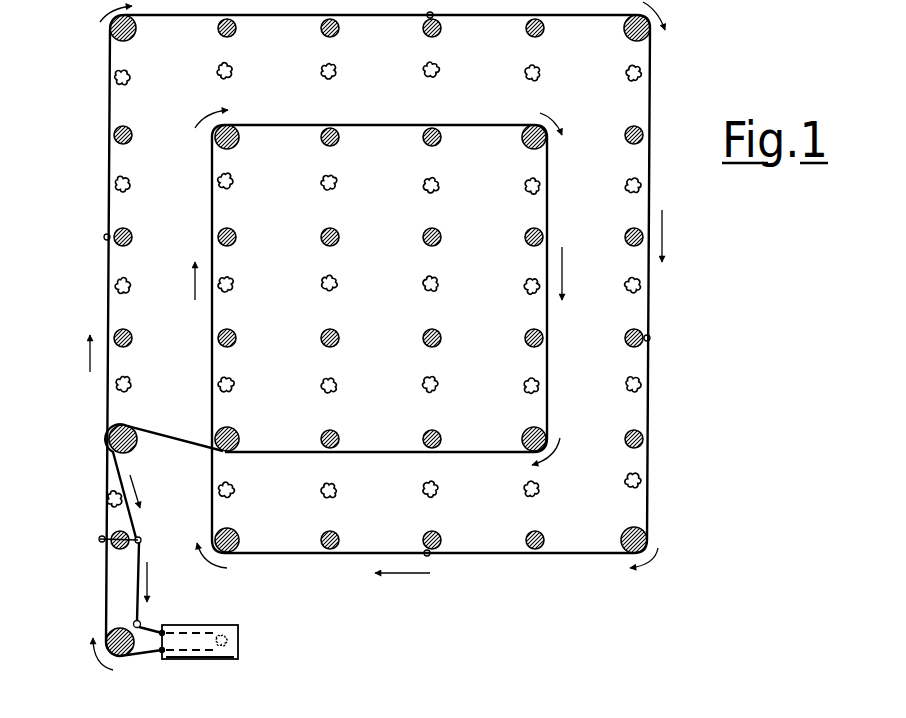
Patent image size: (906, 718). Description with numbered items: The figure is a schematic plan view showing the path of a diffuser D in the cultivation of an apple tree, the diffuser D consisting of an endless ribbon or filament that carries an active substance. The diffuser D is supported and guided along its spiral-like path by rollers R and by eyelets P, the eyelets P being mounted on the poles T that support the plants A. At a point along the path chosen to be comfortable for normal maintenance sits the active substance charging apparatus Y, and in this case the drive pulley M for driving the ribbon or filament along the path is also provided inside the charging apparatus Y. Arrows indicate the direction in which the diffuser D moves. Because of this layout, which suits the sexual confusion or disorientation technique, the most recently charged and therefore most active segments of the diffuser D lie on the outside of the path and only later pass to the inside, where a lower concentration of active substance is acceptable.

The rollers R is at (110, 48).
The diffuser D is at (108, 162).
The eyelets P is at (104, 237).
The poles T is at (338, 143).
The plants A is at (335, 290).
The drive pulley M is at (232, 641).
The active substance charging apparatus Y is at (202, 660).